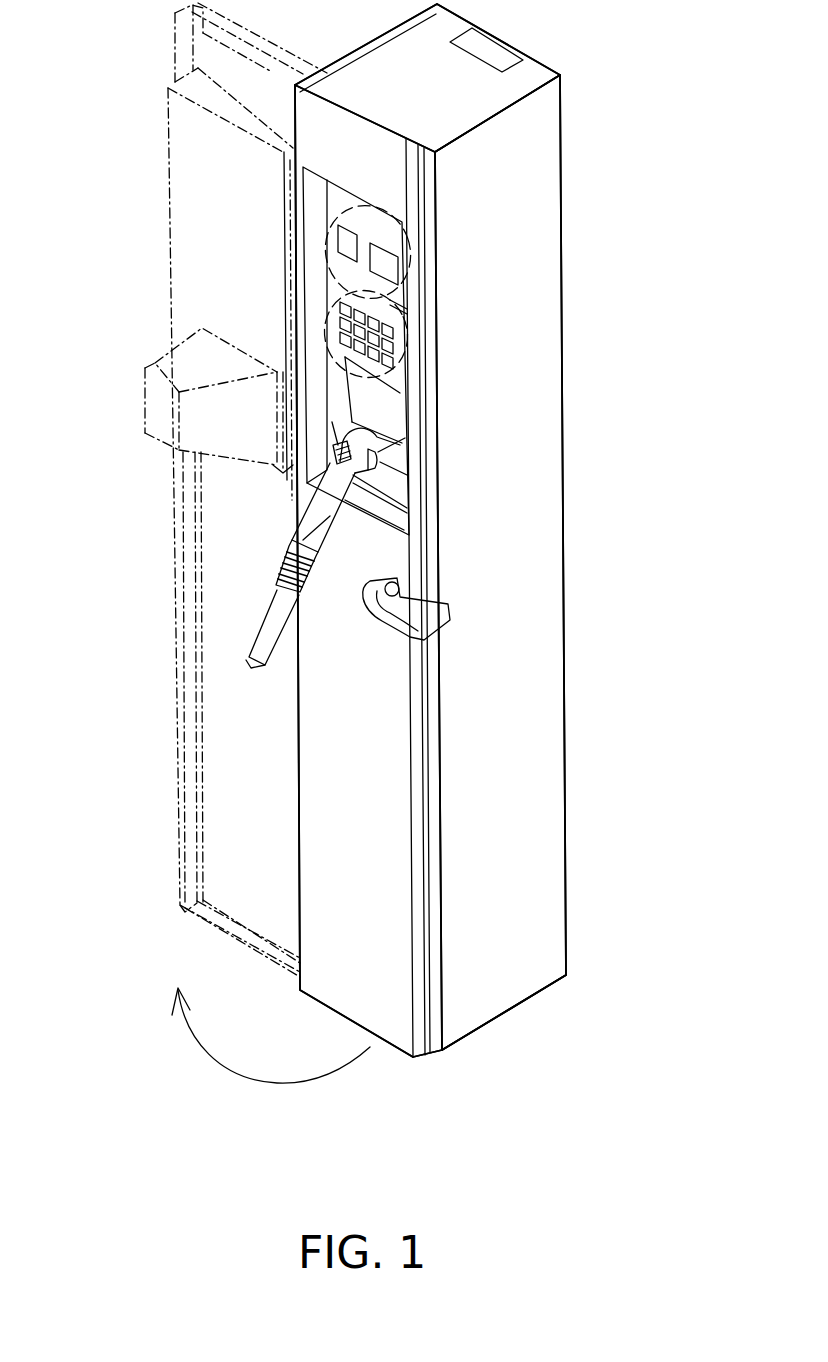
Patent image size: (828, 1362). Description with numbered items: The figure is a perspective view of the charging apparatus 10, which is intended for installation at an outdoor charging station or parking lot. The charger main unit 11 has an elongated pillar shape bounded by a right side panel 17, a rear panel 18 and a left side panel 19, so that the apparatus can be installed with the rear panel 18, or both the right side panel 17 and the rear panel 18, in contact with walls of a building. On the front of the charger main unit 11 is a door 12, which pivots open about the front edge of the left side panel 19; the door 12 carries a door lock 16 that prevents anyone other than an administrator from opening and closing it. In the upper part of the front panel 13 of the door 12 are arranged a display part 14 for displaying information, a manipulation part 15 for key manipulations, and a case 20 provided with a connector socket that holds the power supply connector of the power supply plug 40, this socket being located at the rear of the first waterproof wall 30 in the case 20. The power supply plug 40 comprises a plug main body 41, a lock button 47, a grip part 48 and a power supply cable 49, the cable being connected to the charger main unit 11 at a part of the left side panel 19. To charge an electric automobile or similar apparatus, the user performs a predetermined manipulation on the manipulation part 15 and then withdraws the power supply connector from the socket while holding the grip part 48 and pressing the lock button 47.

The charging apparatus 10 is at (589, 1101).
The charger main unit 11 is at (566, 975).
The door 12 is at (330, 1008).
The front panel 13 is at (325, 762).
The display part 14 is at (338, 217).
The manipulation part 15 is at (338, 300).
The door lock 16 is at (420, 613).
The right side panel 17 is at (530, 828).
The rear panel 18 is at (543, 61).
The left side panel 19 is at (367, 44).
The case 20 is at (400, 405).
The first waterproof wall 30 is at (357, 400).
The power supply plug 40 is at (256, 558).
The plug main body 41 is at (387, 455).
The lock button 47 is at (330, 463).
The grip part 48 is at (300, 532).
The power supply cable 49 is at (258, 636).